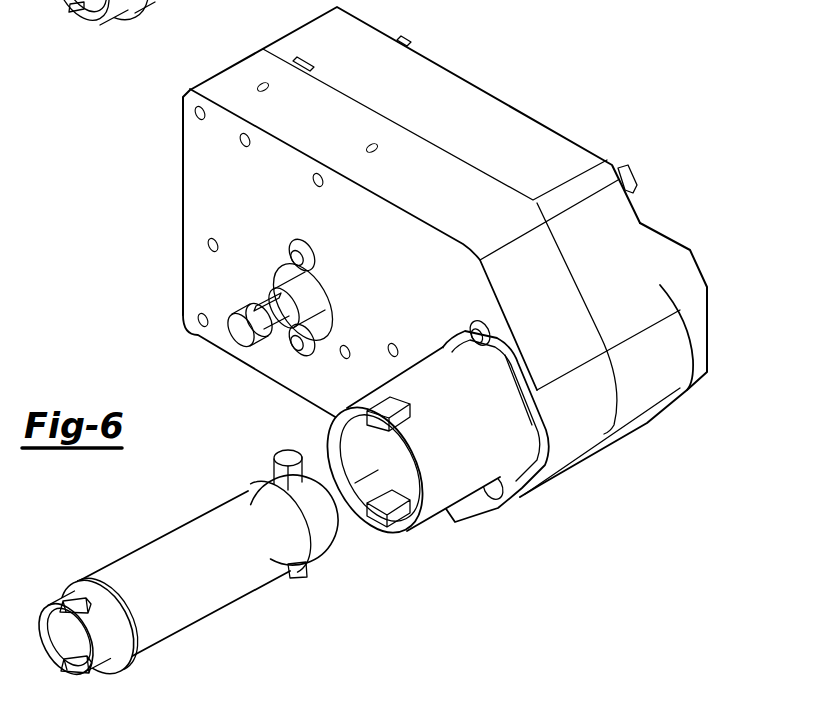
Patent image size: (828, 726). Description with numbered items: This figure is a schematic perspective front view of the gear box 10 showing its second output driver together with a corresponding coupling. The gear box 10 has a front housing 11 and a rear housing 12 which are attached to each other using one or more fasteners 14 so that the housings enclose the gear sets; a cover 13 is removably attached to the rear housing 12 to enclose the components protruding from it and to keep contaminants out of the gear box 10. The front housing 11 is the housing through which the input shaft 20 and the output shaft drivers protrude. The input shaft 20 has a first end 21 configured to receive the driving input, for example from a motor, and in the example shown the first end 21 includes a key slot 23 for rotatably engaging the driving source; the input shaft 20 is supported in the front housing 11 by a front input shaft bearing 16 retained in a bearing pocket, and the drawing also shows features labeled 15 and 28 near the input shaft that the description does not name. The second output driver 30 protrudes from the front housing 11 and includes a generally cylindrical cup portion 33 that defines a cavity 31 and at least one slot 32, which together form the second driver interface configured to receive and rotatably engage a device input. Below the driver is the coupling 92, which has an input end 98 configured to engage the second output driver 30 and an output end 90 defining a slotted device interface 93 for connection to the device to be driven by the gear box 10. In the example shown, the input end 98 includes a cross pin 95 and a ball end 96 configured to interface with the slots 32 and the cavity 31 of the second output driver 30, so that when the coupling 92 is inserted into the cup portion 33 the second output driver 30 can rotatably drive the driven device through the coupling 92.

The gear box 10 is at (650, 70).
The front housing 11 is at (223, 70).
The rear housing 12 is at (487, 91).
The cover 13 is at (696, 258).
The fasteners 14 is at (412, 40).
The fastener bosses 15 is at (292, 243).
The front input shaft bearing 16 is at (332, 307).
The input shaft 20 is at (238, 293).
The first end 21 is at (237, 332).
The key slot 23 is at (267, 296).
The shaft hub 28 is at (305, 295).
The second output driver 30 is at (410, 445).
The cavity 31 is at (365, 452).
The slot 32 is at (380, 400).
The cup portion 33 is at (448, 510).
The output end 90 is at (190, 349).
The coupling 92 is at (140, 518).
The device interface 93 is at (73, 603).
The cross pin 95 is at (265, 465).
The ball end 96 is at (312, 543).
The input end 98 is at (302, 600).